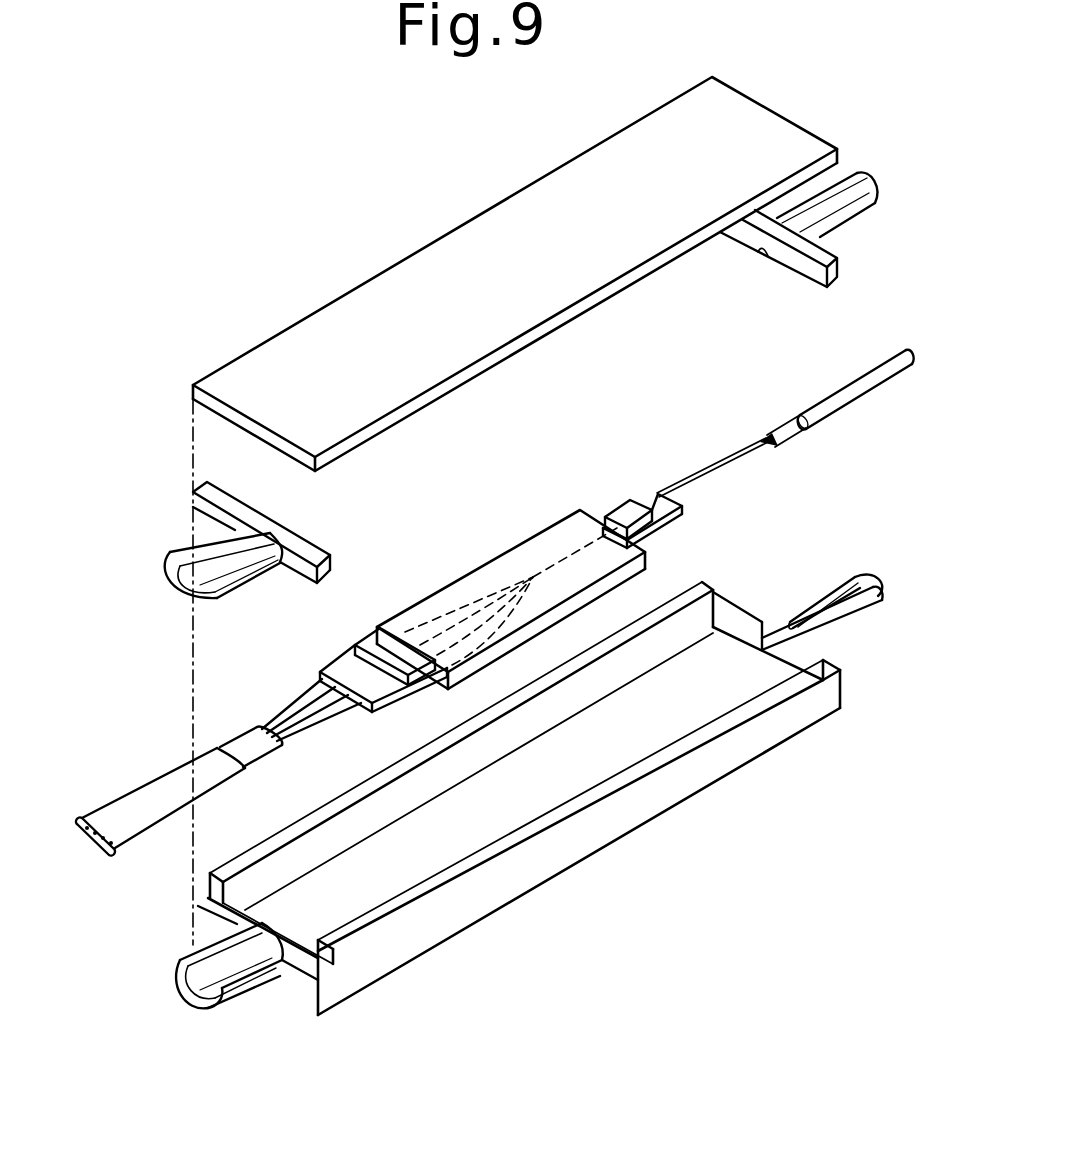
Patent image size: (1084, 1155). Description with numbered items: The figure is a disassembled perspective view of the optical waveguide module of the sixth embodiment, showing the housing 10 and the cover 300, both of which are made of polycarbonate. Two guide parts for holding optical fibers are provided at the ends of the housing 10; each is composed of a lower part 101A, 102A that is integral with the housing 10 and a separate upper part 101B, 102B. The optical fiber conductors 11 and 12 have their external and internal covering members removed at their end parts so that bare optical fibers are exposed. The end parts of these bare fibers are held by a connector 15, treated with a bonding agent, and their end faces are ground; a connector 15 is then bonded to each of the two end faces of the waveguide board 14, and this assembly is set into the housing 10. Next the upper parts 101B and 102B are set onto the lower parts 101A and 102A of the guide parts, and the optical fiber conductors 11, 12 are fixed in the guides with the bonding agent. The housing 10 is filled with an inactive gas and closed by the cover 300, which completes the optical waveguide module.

The cover 300 is at (367, 291).
The housing 10 is at (626, 828).
The lower part of guide part 101A is at (867, 616).
The upper part of guide part 101B is at (878, 196).
The lower part of guide part 102A is at (245, 995).
The upper part of guide part 102B is at (192, 546).
The waveguide board 14 is at (533, 547).
The connector 15 is at (369, 612).
The optical fiber conductor 11 is at (877, 388).
The optical fiber conductor 12 is at (115, 808).